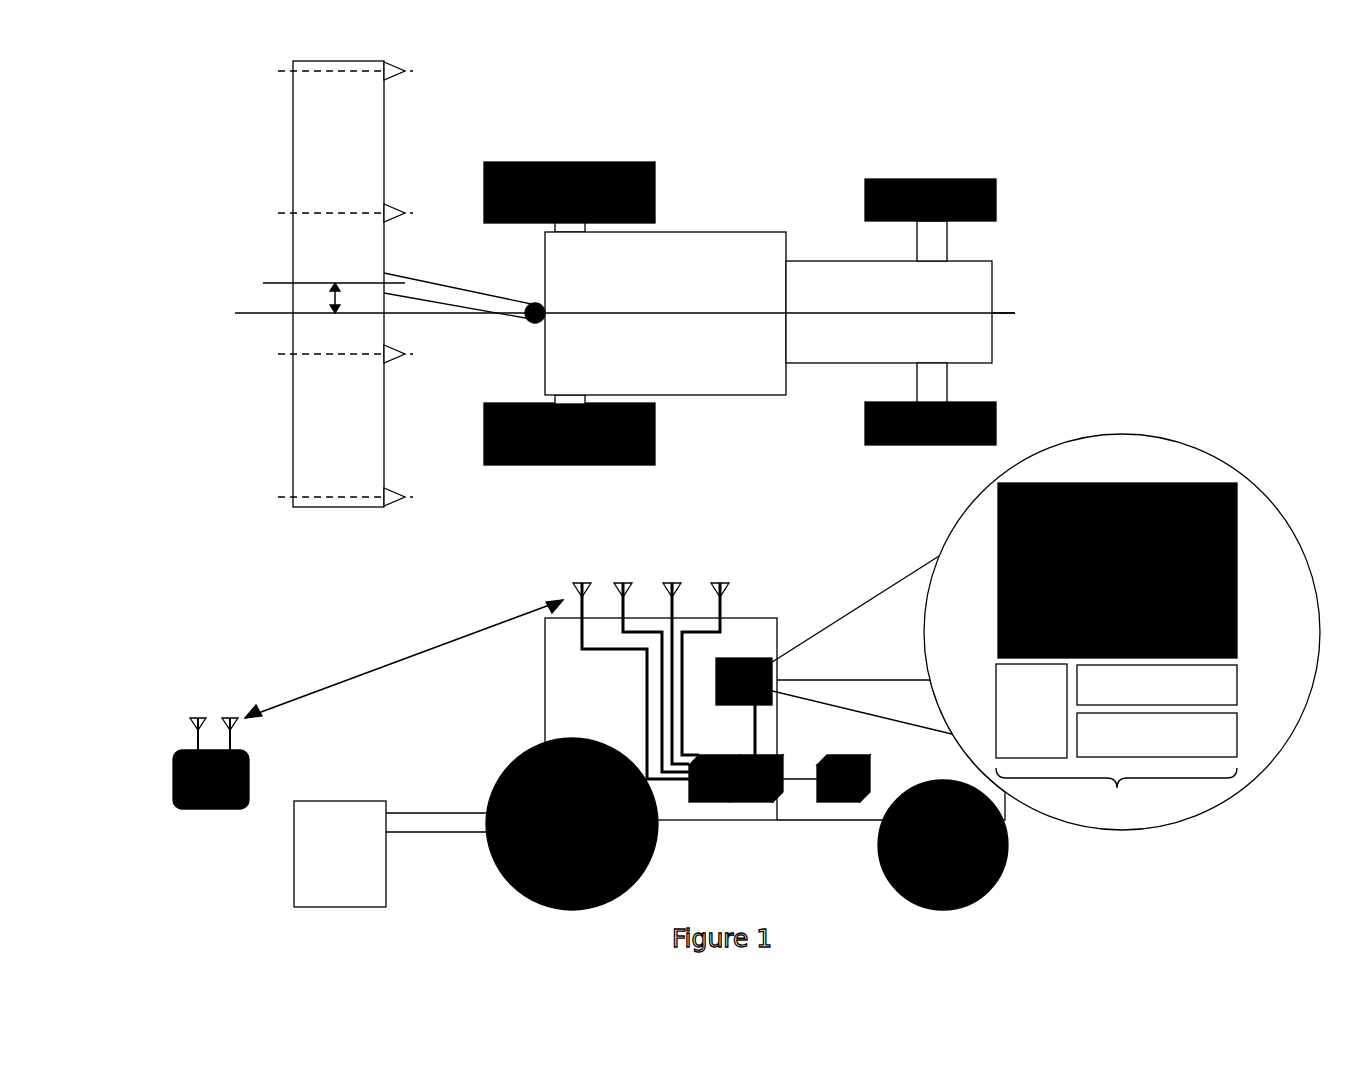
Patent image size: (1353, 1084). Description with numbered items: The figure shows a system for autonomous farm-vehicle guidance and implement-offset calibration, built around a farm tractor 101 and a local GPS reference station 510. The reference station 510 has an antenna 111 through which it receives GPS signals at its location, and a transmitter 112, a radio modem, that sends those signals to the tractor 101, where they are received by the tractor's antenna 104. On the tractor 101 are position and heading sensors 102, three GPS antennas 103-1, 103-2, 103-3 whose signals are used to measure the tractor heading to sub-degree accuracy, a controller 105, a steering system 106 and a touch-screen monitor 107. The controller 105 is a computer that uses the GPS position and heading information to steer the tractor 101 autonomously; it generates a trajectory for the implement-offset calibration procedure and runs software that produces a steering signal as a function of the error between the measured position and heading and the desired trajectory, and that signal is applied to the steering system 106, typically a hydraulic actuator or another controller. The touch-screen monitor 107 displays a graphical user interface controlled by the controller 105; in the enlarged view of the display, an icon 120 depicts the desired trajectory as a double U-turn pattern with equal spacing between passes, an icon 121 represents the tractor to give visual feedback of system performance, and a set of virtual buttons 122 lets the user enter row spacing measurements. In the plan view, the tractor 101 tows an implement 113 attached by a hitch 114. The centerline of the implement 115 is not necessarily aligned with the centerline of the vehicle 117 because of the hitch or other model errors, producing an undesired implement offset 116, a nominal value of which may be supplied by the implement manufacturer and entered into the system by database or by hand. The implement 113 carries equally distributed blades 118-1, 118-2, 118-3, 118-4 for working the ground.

The farm tractor 101 is at (777, 618).
The position and heading sensors 102 is at (712, 786).
The GPS antenna 103-1 is at (646, 668).
The GPS antenna 103-2 is at (672, 664).
The GPS antenna 103-3 is at (711, 660).
The antenna 104 is at (629, 672).
The controller 105 is at (753, 786).
The steering system 106 is at (835, 786).
The touch-screen monitor 107 is at (740, 675).
The antenna 111 is at (198, 724).
The transmitter 112 is at (230, 724).
The local GPS reference station 510 is at (211, 779).
The implement 113 is at (293, 414).
The hitch 114 is at (528, 322).
The centerline of the implement 115 is at (388, 296).
The implement offset 116 is at (320, 298).
The centerline of the vehicle 117 is at (766, 312).
The blade 118-1 is at (373, 497).
The blade 118-2 is at (373, 354).
The blade 118-3 is at (373, 213).
The blade 118-4 is at (373, 71).
The desired trajectory icon 120 is at (1078, 566).
The tractor icon 121 is at (1088, 568).
The virtual buttons 122 is at (1122, 632).